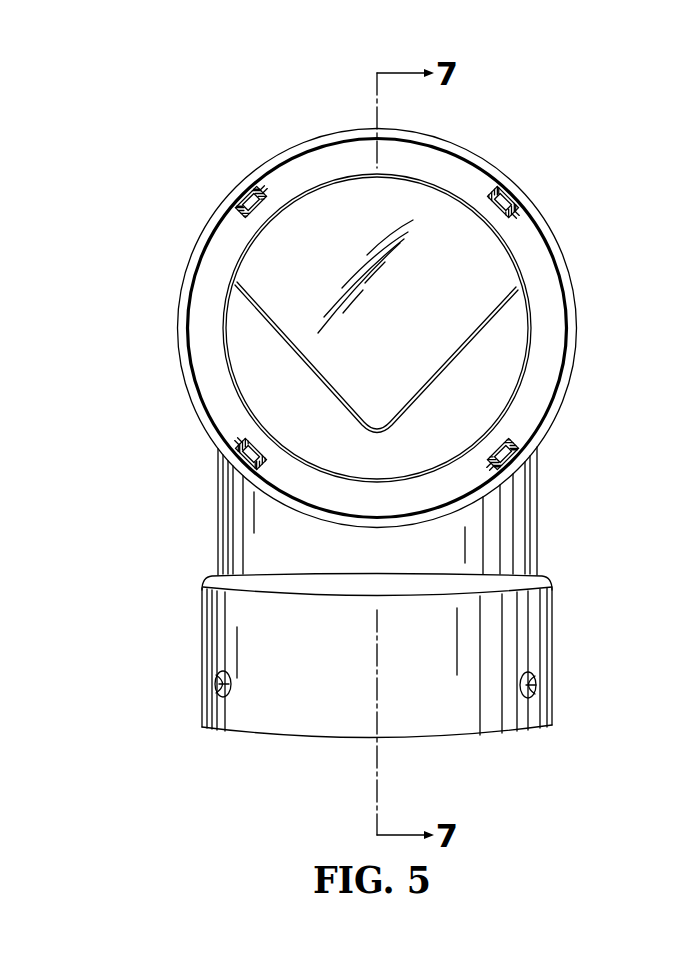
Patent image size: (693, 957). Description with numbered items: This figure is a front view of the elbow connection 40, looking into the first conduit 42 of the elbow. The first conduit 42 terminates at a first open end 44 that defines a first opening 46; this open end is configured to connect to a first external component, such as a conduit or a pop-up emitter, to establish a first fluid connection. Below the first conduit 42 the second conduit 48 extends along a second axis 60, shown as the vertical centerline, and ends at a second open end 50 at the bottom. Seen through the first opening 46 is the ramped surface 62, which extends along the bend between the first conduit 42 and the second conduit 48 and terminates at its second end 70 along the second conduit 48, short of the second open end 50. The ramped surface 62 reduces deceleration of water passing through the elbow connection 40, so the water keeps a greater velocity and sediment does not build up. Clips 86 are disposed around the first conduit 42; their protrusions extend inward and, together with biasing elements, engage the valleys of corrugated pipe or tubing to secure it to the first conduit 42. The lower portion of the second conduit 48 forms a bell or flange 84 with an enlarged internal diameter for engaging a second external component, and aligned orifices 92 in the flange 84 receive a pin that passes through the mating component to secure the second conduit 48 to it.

The elbow connection 40 is at (192, 118).
The first conduit 42 is at (172, 325).
The first open end 44 is at (574, 341).
The first opening 46 is at (552, 292).
The second conduit 48 is at (210, 542).
The second open end 50 is at (285, 737).
The second axis 60 is at (378, 670).
The ramped surface 62 is at (436, 265).
The second end 70 is at (375, 428).
The bell or flange 84 is at (228, 635).
The clips 86 is at (246, 196).
The aligned orifices 92 is at (222, 688).